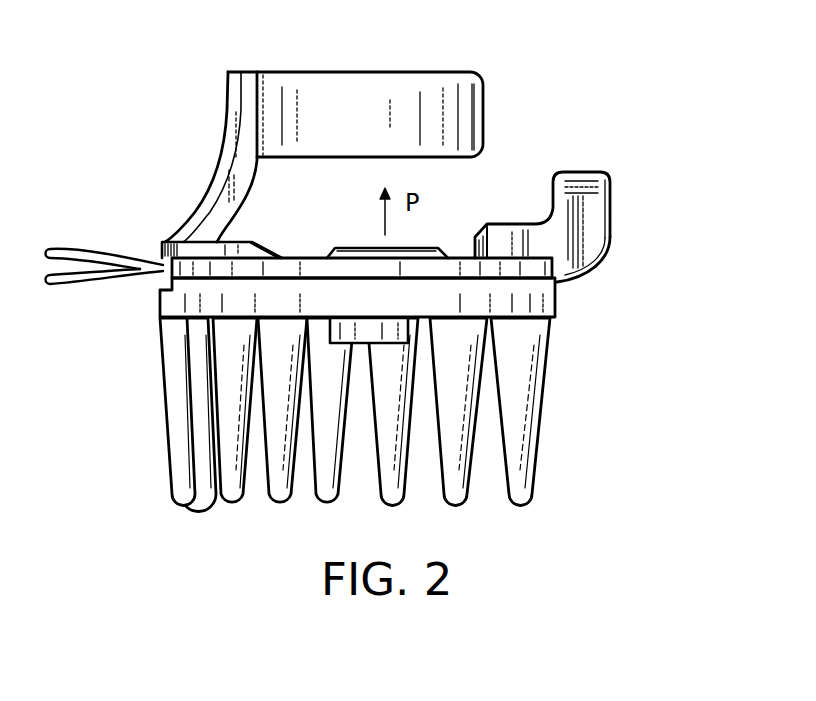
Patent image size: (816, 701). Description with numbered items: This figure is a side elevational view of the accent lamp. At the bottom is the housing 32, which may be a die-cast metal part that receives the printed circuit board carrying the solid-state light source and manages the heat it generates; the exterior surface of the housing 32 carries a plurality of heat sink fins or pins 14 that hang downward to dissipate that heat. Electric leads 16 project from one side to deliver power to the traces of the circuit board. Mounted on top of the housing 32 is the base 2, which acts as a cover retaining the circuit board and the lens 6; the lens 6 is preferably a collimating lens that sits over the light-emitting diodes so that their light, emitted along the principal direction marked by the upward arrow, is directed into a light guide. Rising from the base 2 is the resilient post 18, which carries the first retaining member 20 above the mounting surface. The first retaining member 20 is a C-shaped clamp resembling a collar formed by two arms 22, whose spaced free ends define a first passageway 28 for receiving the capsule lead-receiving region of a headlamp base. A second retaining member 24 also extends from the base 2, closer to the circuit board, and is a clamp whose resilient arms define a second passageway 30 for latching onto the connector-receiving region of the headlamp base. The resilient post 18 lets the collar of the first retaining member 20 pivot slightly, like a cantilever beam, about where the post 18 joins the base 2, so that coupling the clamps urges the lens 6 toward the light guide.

The base 2 is at (158, 248).
The lens 6 is at (361, 238).
The heat sink fins or pins 14 is at (550, 372).
The electric leads 16 is at (97, 285).
The resilient post 18 is at (213, 177).
The first retaining member 20 is at (308, 108).
The arms 22 is at (453, 72).
The second retaining member 24 is at (603, 263).
The first passageway 28 is at (355, 58).
The second passageway 30 is at (582, 160).
The housing 32 is at (557, 298).